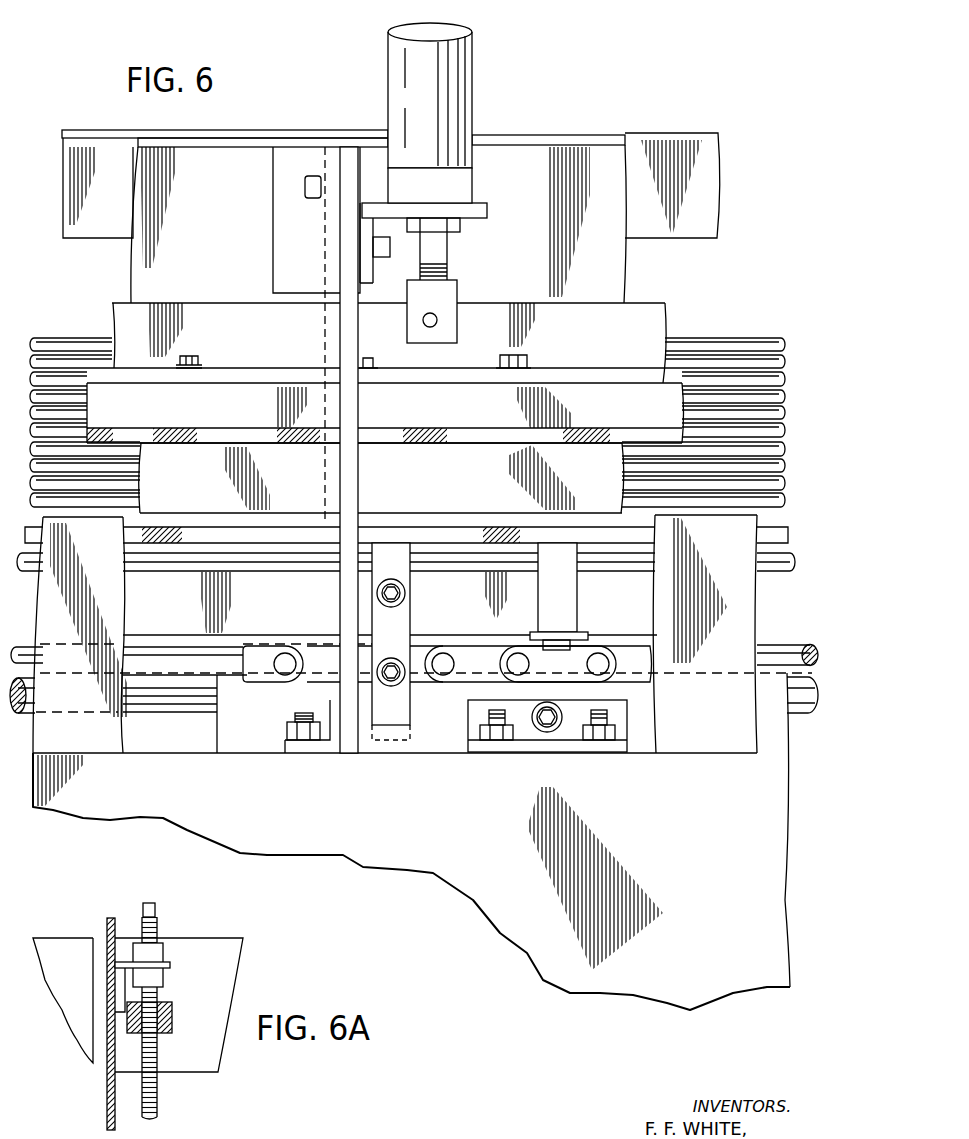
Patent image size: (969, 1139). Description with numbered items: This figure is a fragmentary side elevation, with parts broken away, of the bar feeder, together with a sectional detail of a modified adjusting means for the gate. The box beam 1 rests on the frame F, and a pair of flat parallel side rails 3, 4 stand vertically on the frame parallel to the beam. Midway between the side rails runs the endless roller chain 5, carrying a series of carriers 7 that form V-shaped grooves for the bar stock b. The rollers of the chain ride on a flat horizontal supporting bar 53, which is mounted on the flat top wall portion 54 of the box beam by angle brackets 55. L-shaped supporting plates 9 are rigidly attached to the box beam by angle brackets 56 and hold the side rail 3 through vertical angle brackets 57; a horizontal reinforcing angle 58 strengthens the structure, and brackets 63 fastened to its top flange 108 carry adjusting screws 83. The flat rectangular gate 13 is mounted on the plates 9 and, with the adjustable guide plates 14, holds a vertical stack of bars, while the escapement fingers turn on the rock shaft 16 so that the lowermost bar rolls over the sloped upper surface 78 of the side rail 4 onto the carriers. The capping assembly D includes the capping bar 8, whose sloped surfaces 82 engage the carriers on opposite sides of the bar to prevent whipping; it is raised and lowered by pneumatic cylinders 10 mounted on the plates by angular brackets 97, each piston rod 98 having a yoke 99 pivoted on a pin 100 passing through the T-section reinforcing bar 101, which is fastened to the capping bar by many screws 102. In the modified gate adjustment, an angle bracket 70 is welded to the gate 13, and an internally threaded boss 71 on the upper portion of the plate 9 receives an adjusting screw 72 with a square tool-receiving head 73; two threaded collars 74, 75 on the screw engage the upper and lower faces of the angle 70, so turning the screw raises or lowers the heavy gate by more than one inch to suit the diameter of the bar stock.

In FIG. 6, the box beam 1 is at (433, 865).
In FIG. 6, the side rail 3 is at (112, 609).
In FIG. 6, the side rail 4 is at (777, 599).
In FIG. 6, the roller chain 5 is at (313, 636).
In FIG. 6, the carrier 7 is at (547, 591).
In FIG. 6, the capping bar 8 is at (590, 417).
In FIG. 6, the supporting plate 9 is at (352, 476).
In FIG. 6A, the supporting plate 9 is at (228, 954).
In FIG. 6, the pneumatic cylinder 10 is at (467, 82).
In FIG. 6, the gate 13 is at (618, 271).
In FIG. 6A, the gate 13 is at (107, 1094).
In FIG. 6A, the guide plate 14 is at (62, 1010).
In FIG. 6, the rock shaft 16 is at (157, 703).
In FIG. 6, the supporting bar 53 is at (225, 729).
In FIG. 6, the top wall portion 54 is at (680, 752).
In FIG. 6, the angle bracket 55 is at (564, 727).
In FIG. 6, the angle bracket 56 is at (326, 744).
In FIG. 6, the vertical angle bracket 57 is at (403, 617).
In FIG. 6, the reinforcing angle 58 is at (709, 178).
In FIG. 6, the bracket 63 is at (283, 265).
In FIG. 6A, the angle bracket 70 is at (170, 965).
In FIG. 6A, the boss 71 is at (172, 1020).
In FIG. 6A, the adjusting screw 72 is at (158, 1093).
In FIG. 6A, the tool-receiving head 73 is at (157, 909).
In FIG. 6A, the collar 74 is at (163, 951).
In FIG. 6A, the collar 75 is at (163, 980).
In FIG. 6, the sloped upper surface 78 is at (773, 527).
In FIG. 6, the sloped surface 82 is at (448, 431).
In FIG. 6, the adjusting screw 83 is at (305, 189).
In FIG. 6, the angular bracket 97 is at (487, 211).
In FIG. 6, the piston rod 98 is at (438, 251).
In FIG. 6, the yoke 99 is at (457, 298).
In FIG. 6, the pin 100 is at (438, 318).
In FIG. 6, the reinforcing bar 101 is at (590, 371).
In FIG. 6, the screw 102 is at (183, 357).
In FIG. 6, the top flange 108 is at (585, 137).
In FIG. 6, the bar stock b is at (50, 340).
In FIG. 6, the capping assembly D is at (486, 267).
In FIG. 6, the frame F is at (505, 940).